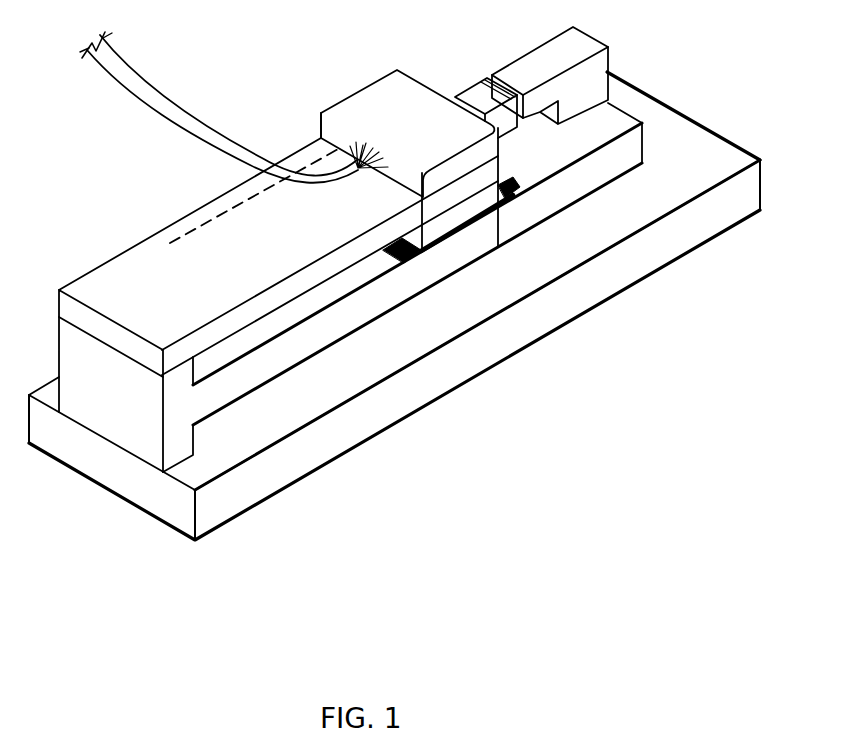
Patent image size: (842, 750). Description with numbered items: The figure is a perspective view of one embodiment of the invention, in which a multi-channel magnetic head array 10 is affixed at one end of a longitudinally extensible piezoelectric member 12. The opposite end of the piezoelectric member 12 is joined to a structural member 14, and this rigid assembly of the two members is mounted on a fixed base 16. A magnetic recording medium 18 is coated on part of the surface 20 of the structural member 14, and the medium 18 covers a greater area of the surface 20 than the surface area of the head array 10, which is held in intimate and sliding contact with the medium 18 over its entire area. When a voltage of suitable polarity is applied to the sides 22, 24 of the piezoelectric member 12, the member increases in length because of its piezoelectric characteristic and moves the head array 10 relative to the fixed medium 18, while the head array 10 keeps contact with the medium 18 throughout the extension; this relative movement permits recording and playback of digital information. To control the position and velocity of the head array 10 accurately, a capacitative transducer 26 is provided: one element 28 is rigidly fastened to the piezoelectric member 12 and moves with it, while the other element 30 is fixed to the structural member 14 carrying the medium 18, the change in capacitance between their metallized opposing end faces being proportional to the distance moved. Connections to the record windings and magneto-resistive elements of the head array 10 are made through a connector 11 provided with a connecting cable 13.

The multi-channel magnetic head array 10 is at (477, 203).
The connector 11 is at (388, 117).
The longitudinally extensible piezoelectric member 12 is at (220, 247).
The connecting cable 13 is at (143, 76).
The structural member 14 is at (288, 352).
The fixed base 16 is at (240, 490).
The magnetic recording medium 18 is at (407, 256).
The surface 20 is at (603, 128).
The side 22 is at (352, 248).
The side 24 is at (170, 243).
The capacitative transducer 26 is at (520, 78).
The transducer element 28 is at (507, 117).
The transducer element 30 is at (577, 90).